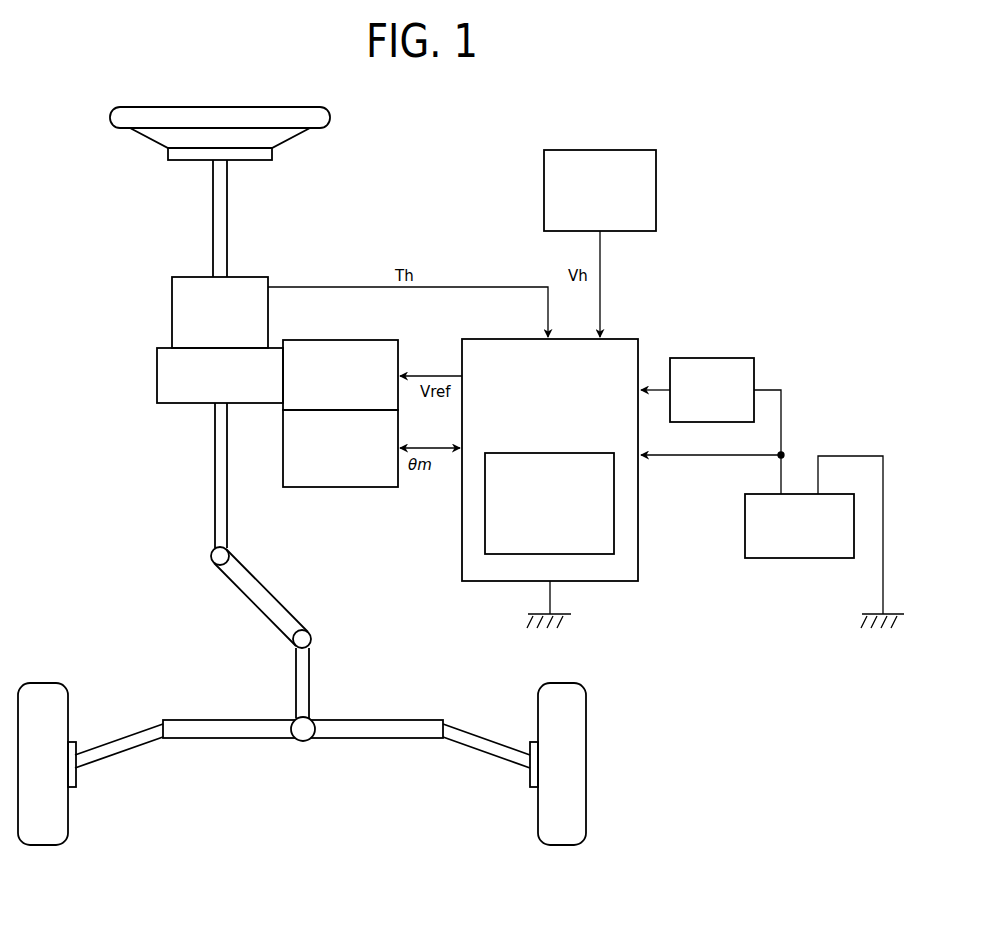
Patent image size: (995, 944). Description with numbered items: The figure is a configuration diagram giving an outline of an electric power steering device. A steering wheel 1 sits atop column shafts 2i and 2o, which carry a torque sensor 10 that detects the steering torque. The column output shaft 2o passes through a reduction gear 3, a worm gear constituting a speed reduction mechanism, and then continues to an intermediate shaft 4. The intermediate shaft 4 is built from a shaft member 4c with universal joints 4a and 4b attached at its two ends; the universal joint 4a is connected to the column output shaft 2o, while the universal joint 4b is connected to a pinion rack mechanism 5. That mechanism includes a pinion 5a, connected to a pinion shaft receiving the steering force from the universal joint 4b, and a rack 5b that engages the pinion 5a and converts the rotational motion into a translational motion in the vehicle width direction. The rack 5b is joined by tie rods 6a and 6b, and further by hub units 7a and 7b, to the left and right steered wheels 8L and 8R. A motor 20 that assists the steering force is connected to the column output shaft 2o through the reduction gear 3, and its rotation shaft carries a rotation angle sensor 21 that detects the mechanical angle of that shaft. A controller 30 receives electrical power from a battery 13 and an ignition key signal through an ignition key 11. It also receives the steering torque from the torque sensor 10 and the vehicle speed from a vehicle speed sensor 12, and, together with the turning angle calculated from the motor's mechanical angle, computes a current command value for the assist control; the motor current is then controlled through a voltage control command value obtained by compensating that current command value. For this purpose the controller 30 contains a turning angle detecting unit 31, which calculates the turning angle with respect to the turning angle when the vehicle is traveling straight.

The steering wheel 1 is at (330, 118).
The column shaft 2i is at (213, 200).
The column output shaft 2o is at (215, 450).
The reduction gear 3 is at (157, 380).
The intermediate shaft 4 is at (218, 632).
The universal joint 4a is at (211, 559).
The universal joint 4b is at (272, 674).
The shaft member 4c is at (257, 604).
The pinion rack mechanism 5 is at (303, 790).
The pinion 5a is at (307, 741).
The rack 5b is at (262, 740).
The tie rod 6a is at (110, 740).
The tie rod 6b is at (490, 740).
The hub unit 7a is at (76, 776).
The hub unit 7b is at (528, 776).
The steered wheel 8L is at (42, 845).
The steered wheel 8R is at (562, 845).
The torque sensor 10 is at (172, 306).
The ignition key 11 is at (735, 358).
The vehicle speed sensor 12 is at (630, 150).
The battery 13 is at (768, 558).
The motor 20 is at (398, 352).
The rotation angle sensor 21 is at (337, 487).
The controller 30 is at (620, 339).
The turning angle detecting unit 31 is at (560, 453).